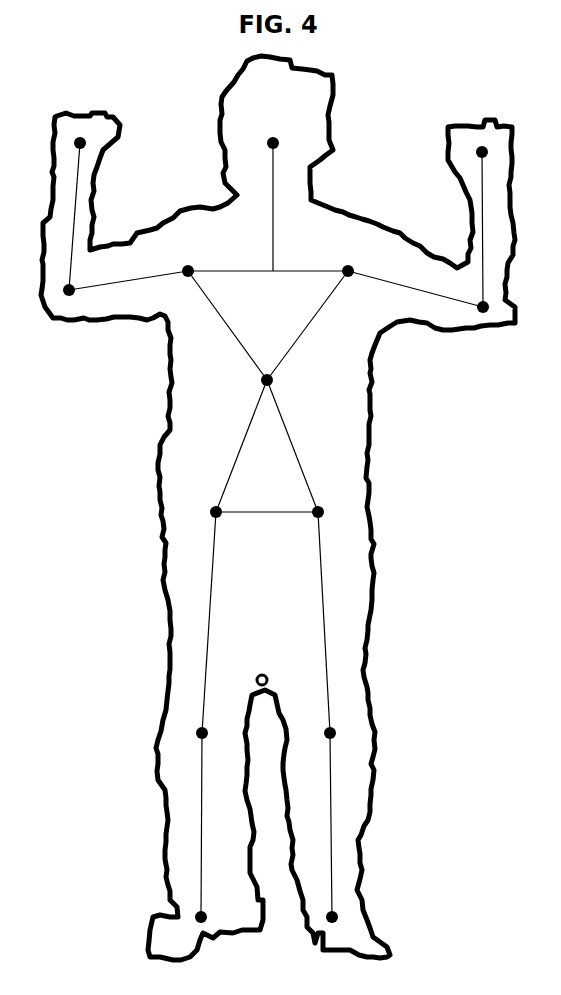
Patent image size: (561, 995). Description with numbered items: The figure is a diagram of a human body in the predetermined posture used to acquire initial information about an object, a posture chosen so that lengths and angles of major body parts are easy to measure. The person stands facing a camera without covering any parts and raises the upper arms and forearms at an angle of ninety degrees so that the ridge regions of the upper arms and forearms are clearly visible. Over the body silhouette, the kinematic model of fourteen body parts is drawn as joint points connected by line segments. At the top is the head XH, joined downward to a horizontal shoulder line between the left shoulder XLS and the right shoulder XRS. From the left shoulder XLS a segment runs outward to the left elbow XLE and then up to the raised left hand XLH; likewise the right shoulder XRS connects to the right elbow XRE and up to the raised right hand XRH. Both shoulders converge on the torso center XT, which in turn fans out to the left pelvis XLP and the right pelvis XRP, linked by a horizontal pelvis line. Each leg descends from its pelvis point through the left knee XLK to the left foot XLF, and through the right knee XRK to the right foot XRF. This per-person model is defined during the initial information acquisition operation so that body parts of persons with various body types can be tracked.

The head XH is at (274, 135).
The left hand XLH is at (76, 154).
The left elbow XLE is at (68, 281).
The left shoulder XLS is at (185, 261).
The right shoulder XRS is at (346, 261).
The right hand XRH is at (481, 161).
The right elbow XRE is at (482, 299).
The torso center XT is at (268, 371).
The left pelvis XLP is at (213, 504).
The right pelvis XRP is at (316, 504).
The left knee XLK is at (201, 724).
The right knee XRK is at (329, 724).
The left foot XLF is at (198, 909).
The right foot XRF is at (329, 909).